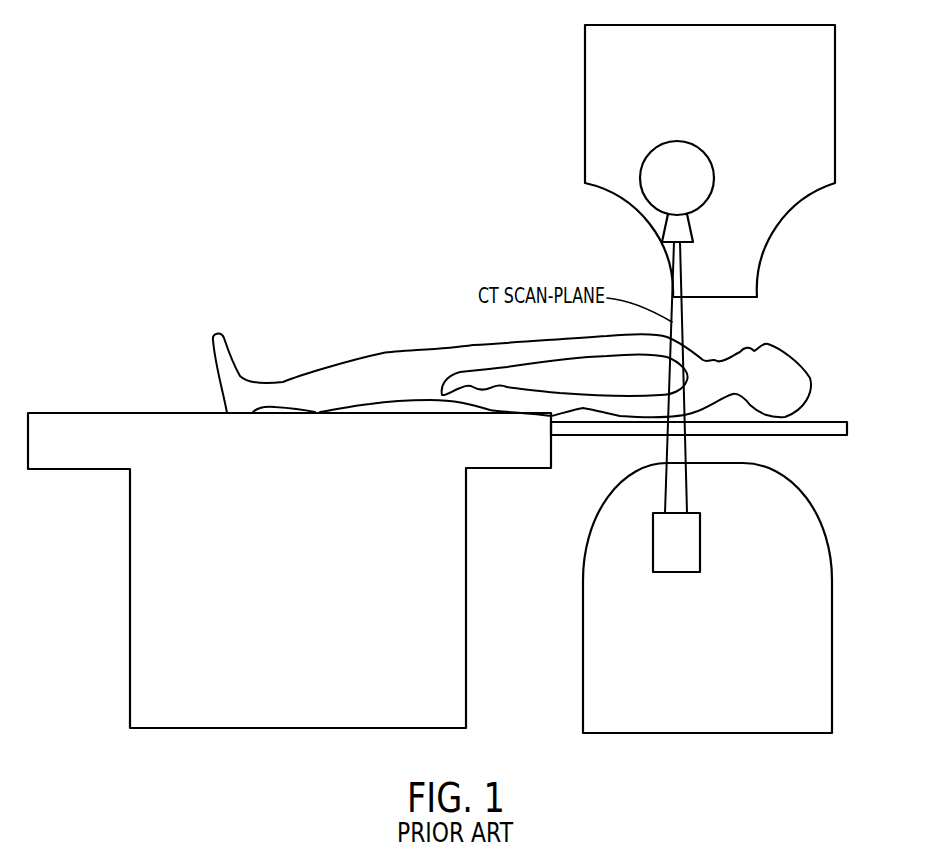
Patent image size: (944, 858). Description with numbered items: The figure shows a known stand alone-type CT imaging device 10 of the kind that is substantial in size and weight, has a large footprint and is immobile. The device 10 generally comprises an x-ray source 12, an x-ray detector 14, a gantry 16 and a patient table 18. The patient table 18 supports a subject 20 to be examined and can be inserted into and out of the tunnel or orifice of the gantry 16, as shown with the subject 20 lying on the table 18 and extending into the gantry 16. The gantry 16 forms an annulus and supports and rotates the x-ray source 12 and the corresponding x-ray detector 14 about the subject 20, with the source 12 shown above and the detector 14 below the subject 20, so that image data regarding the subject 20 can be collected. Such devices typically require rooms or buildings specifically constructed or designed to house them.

The stand alone-type CT imaging device 10 is at (293, 178).
The x-ray source 12 is at (642, 163).
The x-ray detector 14 is at (653, 560).
The gantry 16 is at (835, 488).
The patient table 18 is at (130, 640).
The subject 20 is at (402, 322).